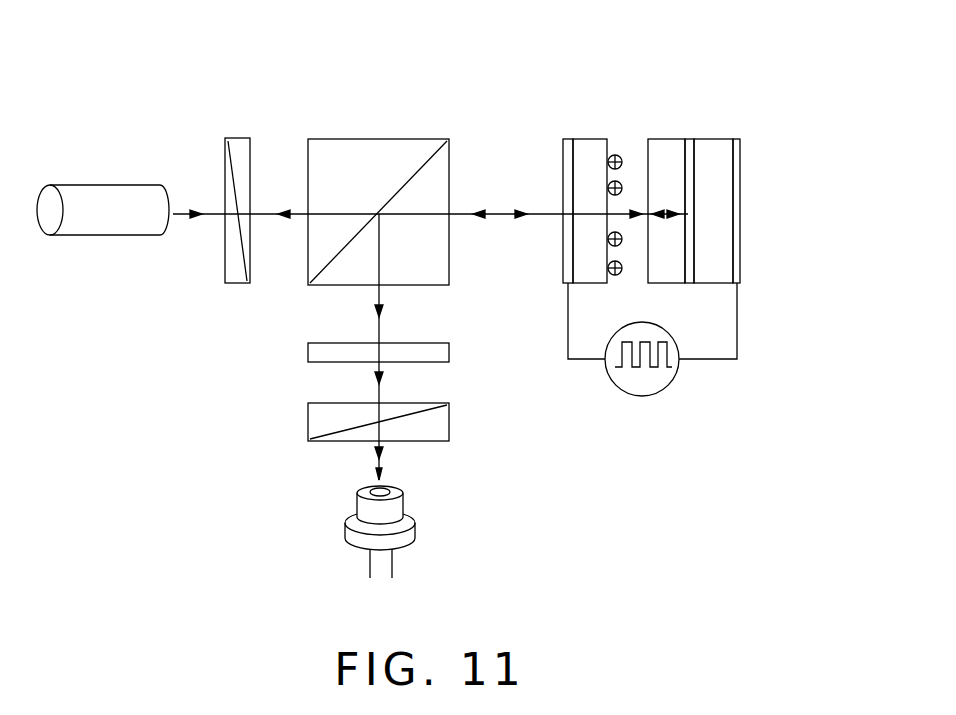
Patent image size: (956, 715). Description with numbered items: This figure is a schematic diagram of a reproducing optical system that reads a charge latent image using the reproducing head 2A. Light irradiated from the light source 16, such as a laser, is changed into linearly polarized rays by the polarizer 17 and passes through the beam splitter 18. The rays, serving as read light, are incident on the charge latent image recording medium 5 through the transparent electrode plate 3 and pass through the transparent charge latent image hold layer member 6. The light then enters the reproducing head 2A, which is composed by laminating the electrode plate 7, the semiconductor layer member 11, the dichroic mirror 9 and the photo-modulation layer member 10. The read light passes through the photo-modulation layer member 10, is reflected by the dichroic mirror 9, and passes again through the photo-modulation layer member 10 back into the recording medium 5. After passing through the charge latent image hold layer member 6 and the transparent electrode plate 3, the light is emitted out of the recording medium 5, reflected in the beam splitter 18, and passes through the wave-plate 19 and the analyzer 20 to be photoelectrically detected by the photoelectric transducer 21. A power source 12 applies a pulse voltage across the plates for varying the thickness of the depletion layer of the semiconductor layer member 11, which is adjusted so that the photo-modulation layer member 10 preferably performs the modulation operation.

The light source 16 is at (97, 190).
The polarizer 17 is at (242, 147).
The beam splitter 18 is at (383, 150).
The wave-plate 19 is at (435, 354).
The analyzer 20 is at (440, 422).
The photoelectric transducer 21 is at (412, 517).
The transparent electrode plate 3 is at (560, 180).
The charge latent image recording medium 5 is at (550, 137).
The charge latent image hold layer member 6 is at (598, 147).
The photo-modulation layer member 10 is at (665, 145).
The dichroic mirror 9 is at (695, 147).
The semiconductor layer member 11 is at (722, 147).
The electrode plate 7 is at (772, 162).
The reproducing head 2A is at (742, 147).
The power source 12 is at (660, 378).